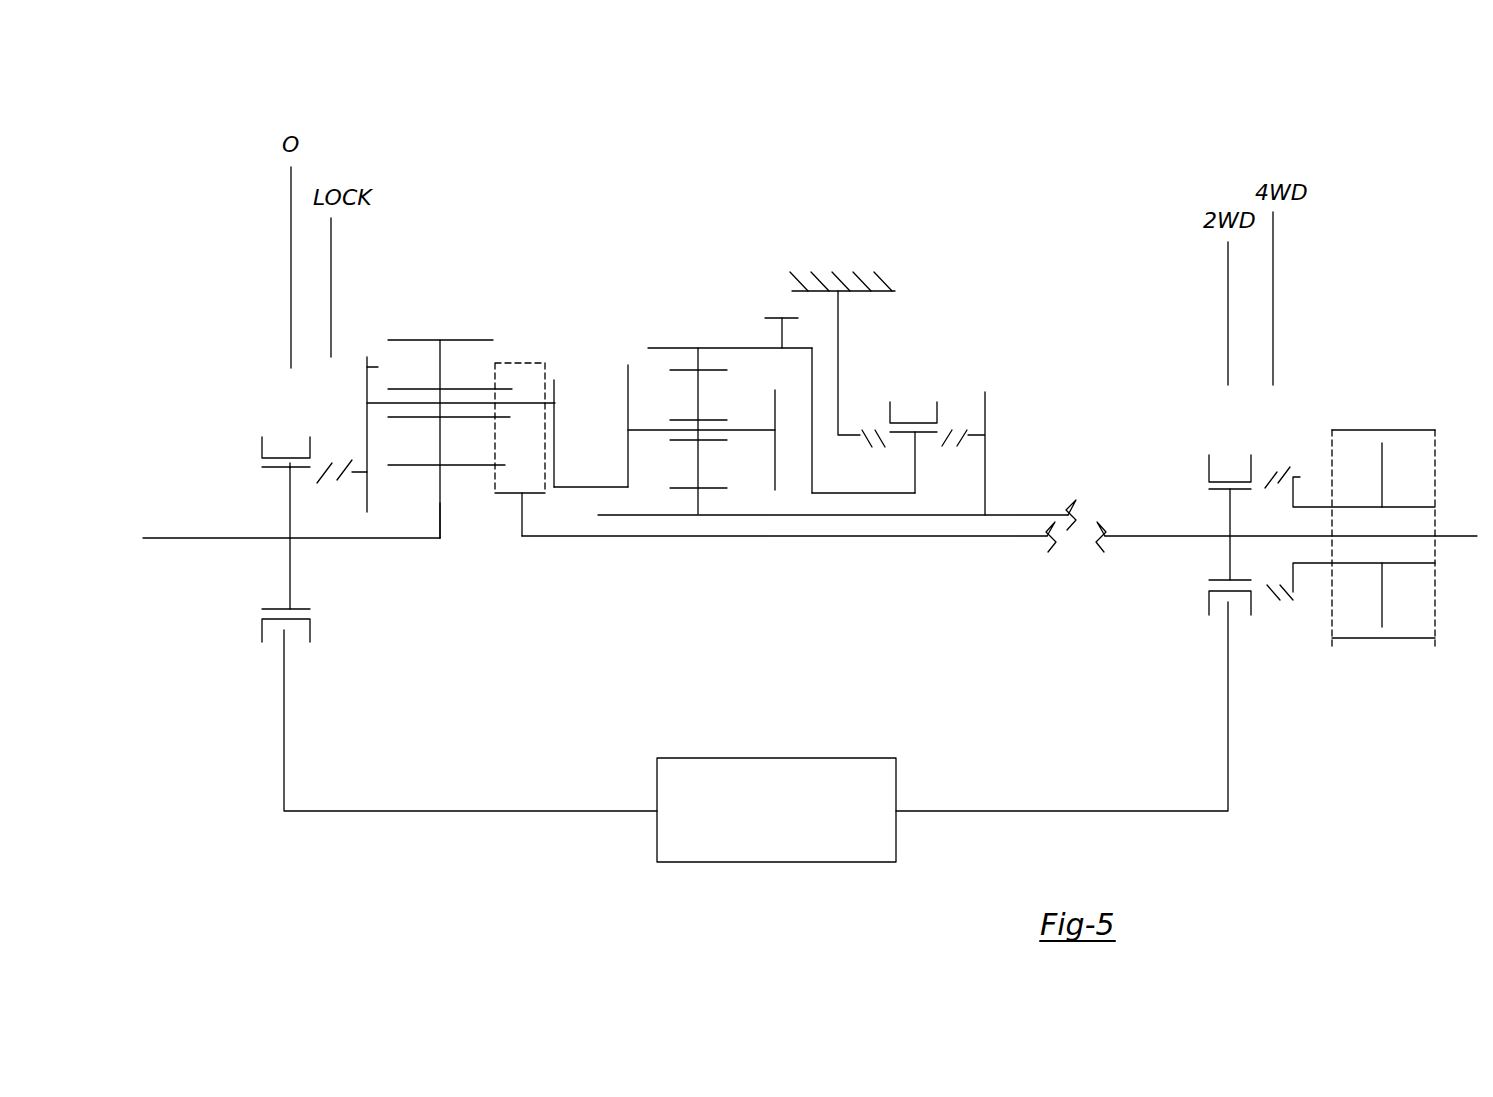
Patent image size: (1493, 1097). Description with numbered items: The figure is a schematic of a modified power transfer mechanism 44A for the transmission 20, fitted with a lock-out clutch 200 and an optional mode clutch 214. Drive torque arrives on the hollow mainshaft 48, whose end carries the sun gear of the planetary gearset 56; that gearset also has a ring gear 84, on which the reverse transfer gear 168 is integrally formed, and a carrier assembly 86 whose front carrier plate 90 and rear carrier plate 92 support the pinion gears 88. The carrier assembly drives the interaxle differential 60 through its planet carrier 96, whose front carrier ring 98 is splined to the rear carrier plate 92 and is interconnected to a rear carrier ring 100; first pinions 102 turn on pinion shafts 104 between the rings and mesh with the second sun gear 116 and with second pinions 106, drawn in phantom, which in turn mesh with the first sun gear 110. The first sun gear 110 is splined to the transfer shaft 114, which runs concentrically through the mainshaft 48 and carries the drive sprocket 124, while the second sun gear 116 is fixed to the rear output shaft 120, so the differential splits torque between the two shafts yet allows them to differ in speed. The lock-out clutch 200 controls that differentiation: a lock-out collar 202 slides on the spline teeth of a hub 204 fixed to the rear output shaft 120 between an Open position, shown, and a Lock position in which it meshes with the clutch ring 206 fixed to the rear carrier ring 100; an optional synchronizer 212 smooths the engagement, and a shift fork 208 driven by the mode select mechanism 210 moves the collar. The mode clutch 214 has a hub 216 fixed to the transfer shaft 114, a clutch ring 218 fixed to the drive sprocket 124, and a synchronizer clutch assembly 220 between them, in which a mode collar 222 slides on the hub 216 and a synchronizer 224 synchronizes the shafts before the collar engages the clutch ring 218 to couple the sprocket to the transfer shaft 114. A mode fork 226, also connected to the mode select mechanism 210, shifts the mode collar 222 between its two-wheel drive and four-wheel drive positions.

The transmission 20 is at (1378, 236).
The modified power transfer mechanism 44A is at (1058, 260).
The mainshaft 48 is at (1028, 515).
The planetary gearset 56 is at (673, 348).
The interaxle differential 60 is at (418, 340).
The ring gear 84 is at (718, 348).
The carrier assembly 86 is at (620, 449).
The pinion gears 88 is at (698, 392).
The front carrier plate 90 is at (775, 453).
The rear carrier plate 92 is at (628, 366).
The planet carrier 96 is at (562, 400).
The front carrier ring 98 is at (554, 463).
The rear carrier ring 100 is at (377, 367).
The first pinions 102 is at (440, 368).
The pinion shafts 104 is at (367, 432).
The second pinions 106 is at (512, 363).
The first sun gear 110 is at (522, 516).
The transfer shaft 114 is at (935, 536).
The second sun gear 116 is at (440, 503).
The rear output shaft 120 is at (180, 535).
The drive sprocket 124 is at (1402, 430).
The reverse transfer gear 168 is at (781, 318).
The lock-out clutch 200 is at (235, 440).
The lock-out collar 202 is at (262, 440).
The hub 204 is at (288, 570).
The clutch ring 206 is at (352, 473).
The shift fork 208 is at (284, 698).
The mode select mechanism 210 is at (835, 768).
The synchronizer 212 is at (330, 462).
The mode clutch 214 is at (1199, 445).
The hub 216 is at (1230, 510).
The clutch ring 218 is at (1300, 490).
The synchronizer clutch assembly 220 is at (1282, 610).
The mode collar 222 is at (1209, 603).
The synchronizer 224 is at (1270, 488).
The mode fork 226 is at (1228, 687).